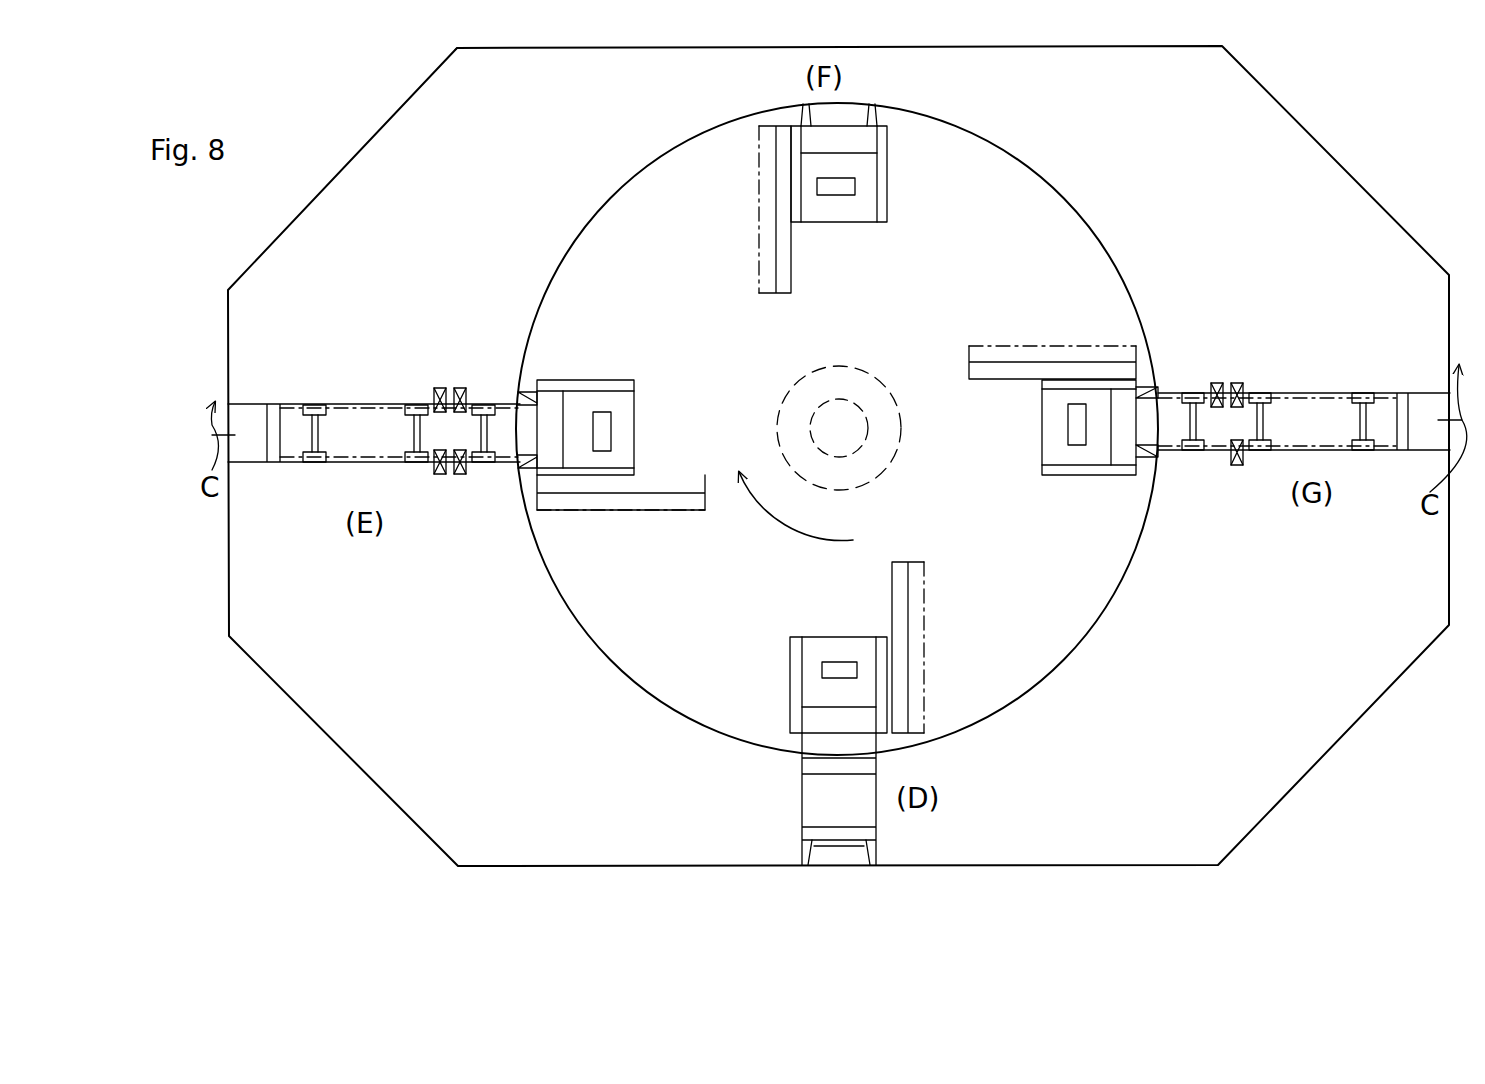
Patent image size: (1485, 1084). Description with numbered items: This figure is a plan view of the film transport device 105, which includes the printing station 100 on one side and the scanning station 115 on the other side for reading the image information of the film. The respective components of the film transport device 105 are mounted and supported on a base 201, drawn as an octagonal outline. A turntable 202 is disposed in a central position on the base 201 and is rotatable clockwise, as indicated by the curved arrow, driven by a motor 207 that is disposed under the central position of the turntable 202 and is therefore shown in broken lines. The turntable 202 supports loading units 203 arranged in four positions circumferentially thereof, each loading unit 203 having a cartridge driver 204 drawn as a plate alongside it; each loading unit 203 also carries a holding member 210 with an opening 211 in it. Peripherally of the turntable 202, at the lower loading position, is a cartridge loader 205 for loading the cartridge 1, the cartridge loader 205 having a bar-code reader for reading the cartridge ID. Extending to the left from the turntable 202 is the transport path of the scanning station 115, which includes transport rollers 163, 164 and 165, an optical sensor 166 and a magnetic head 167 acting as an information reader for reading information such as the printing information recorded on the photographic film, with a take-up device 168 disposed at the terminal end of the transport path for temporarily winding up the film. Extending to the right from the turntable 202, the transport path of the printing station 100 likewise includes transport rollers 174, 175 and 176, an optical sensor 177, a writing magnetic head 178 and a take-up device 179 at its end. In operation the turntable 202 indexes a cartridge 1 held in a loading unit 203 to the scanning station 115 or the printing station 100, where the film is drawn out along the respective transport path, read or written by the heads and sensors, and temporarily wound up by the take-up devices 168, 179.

The cartridge 1 is at (878, 826).
The printing station 100 is at (1333, 355).
The film transport device 105 is at (1330, 117).
The scanning station 115 is at (363, 345).
The transport roller 163 is at (483, 463).
The transport roller 164 is at (418, 463).
The transport roller 165 is at (315, 463).
The optical sensor 166 is at (483, 403).
The magnetic head 167 is at (440, 388).
The take-up device 168 is at (262, 402).
The transport roller 174 is at (1193, 451).
The transport roller 175 is at (1260, 451).
The transport roller 176 is at (1364, 451).
The optical sensor 177 is at (1217, 383).
The writing magnetic head 178 is at (1239, 440).
The take-up device 179 is at (1400, 393).
The base 201 is at (418, 113).
The turntable 202 is at (592, 238).
The loading unit 203 is at (891, 184).
The cartridge driver 204 is at (759, 204).
The cartridge loader 205 is at (799, 813).
The motor 207 is at (855, 365).
The holding plate 210 is at (865, 215).
The opening 211 is at (838, 197).